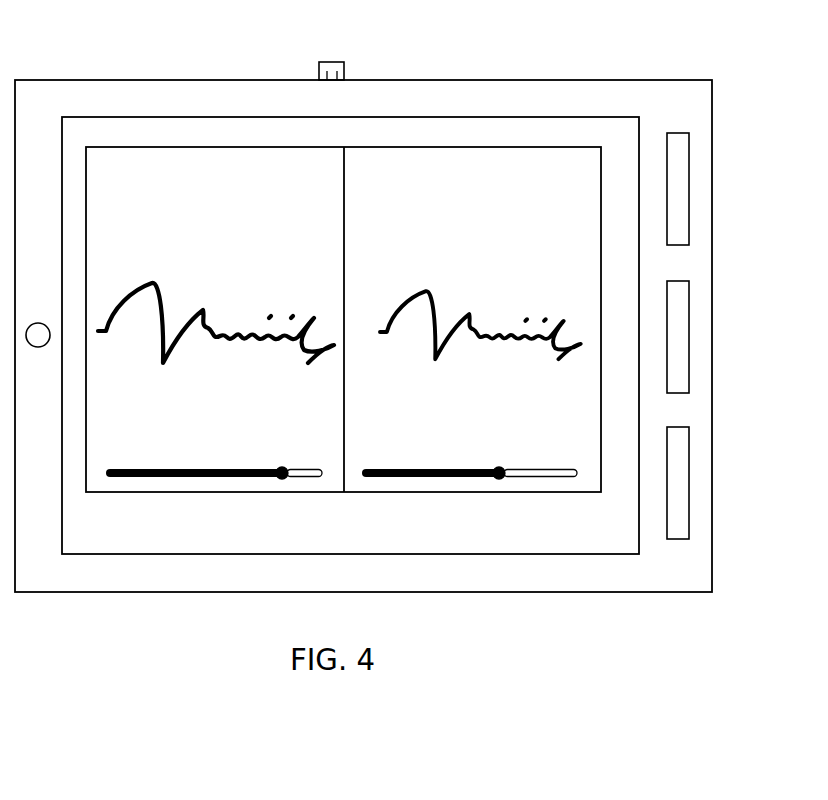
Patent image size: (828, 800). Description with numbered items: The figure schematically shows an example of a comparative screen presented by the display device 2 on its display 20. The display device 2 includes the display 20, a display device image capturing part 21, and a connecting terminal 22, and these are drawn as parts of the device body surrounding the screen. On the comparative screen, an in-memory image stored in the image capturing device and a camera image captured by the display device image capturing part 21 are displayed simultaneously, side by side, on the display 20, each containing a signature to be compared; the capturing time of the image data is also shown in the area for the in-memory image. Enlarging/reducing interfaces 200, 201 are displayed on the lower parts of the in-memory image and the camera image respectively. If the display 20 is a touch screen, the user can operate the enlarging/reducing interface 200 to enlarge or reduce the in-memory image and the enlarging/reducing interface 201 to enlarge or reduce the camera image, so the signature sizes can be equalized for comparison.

The display device 2 is at (697, 80).
The display 20 is at (520, 117).
The display device image capturing part 21 is at (37, 322).
The connecting terminal 22 is at (331, 62).
The enlarging/reducing interface 200 is at (213, 471).
The enlarging/reducing interface 201 is at (465, 471).